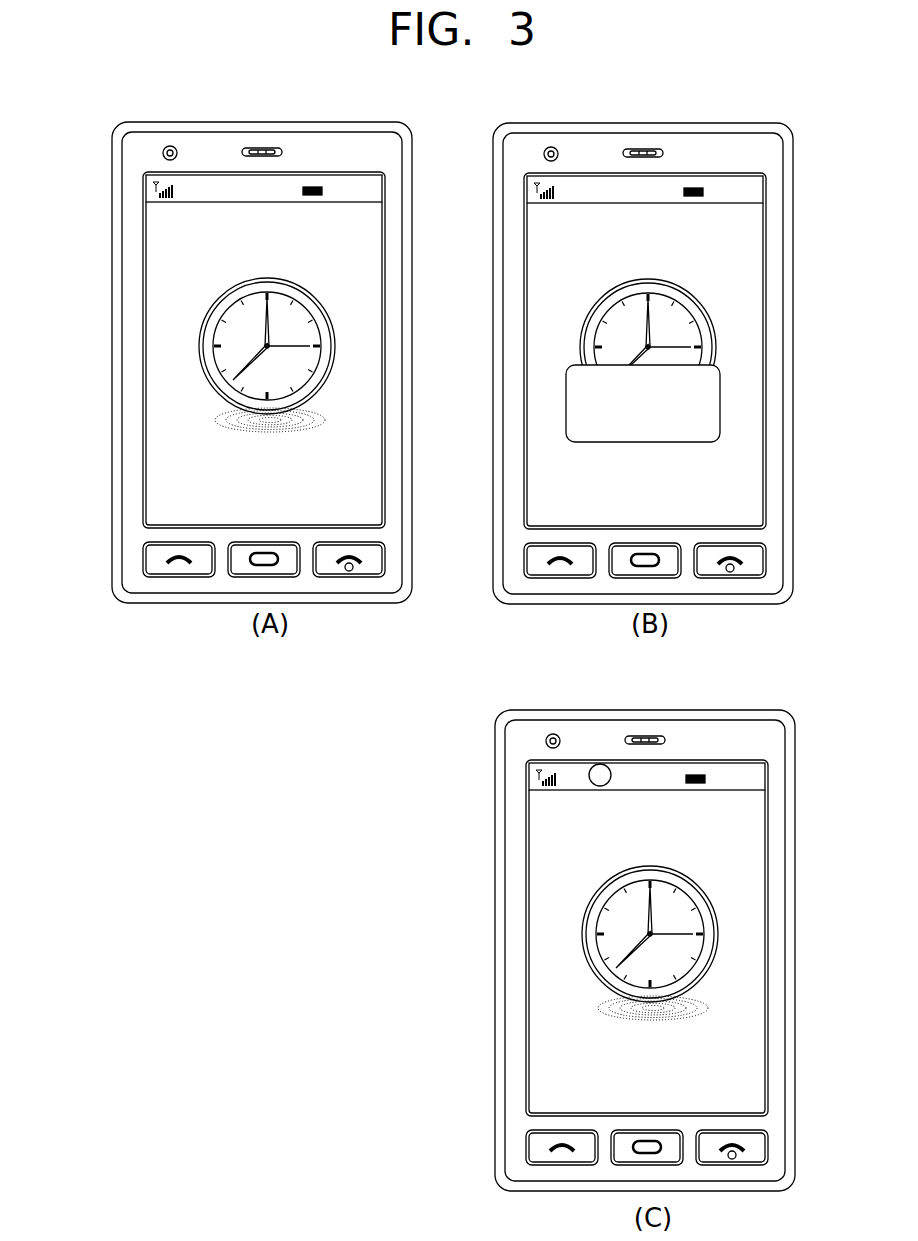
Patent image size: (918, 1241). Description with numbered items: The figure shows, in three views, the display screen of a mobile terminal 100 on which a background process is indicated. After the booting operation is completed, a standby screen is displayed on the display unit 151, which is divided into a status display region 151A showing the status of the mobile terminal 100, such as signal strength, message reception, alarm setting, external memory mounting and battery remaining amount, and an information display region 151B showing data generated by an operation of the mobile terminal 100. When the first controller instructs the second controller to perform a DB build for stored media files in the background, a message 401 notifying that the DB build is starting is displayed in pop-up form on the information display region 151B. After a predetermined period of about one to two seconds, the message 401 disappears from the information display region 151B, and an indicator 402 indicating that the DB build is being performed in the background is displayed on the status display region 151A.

The mobile terminal 100 is at (106, 140).
The display unit 151 is at (145, 336).
The status display region 151A is at (145, 193).
The information display region 151B is at (148, 247).
The message 401 is at (720, 404).
The indicator 402 is at (595, 760).